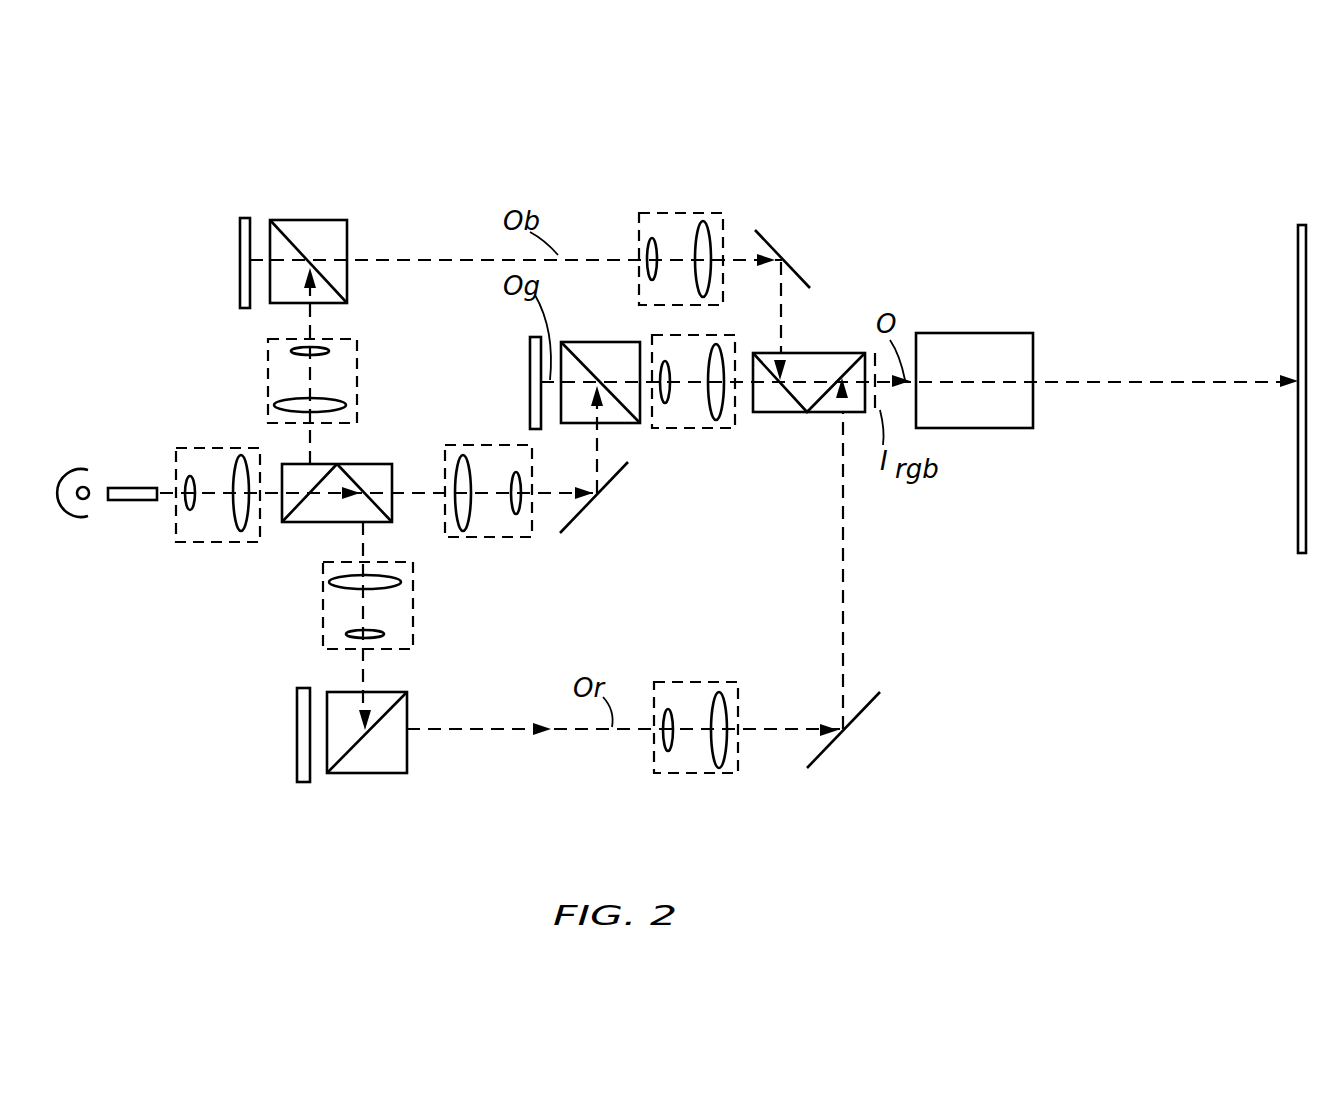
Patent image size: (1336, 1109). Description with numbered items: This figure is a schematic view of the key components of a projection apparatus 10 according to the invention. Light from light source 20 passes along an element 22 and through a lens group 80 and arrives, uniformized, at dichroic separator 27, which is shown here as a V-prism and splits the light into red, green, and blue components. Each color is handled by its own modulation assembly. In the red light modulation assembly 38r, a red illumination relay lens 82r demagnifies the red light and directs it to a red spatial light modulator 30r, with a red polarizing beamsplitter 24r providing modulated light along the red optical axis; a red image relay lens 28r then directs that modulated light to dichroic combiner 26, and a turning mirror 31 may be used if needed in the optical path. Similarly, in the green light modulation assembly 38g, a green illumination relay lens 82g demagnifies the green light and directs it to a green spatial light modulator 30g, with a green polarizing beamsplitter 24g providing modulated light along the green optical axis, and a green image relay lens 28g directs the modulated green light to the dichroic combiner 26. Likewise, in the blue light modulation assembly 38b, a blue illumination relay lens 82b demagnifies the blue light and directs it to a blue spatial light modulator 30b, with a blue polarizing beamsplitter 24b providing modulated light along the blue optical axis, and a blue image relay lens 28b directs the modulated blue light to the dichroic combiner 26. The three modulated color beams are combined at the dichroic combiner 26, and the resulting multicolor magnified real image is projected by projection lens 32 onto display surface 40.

The projection display system 10 is at (1038, 586).
The light source 20 is at (75, 520).
The light pipe 22 is at (138, 500).
The blue polarizing beamsplitter 24b is at (347, 232).
The green polarizing beamsplitter 24g is at (594, 342).
The red polarizing beamsplitter 24r is at (392, 773).
The dichroic combiner 26 is at (822, 413).
The dichroic separator 27 is at (370, 462).
The blue image relay lens 28b is at (672, 213).
The green image relay lens 28g is at (690, 428).
The red image relay lens 28r is at (696, 682).
The blue spatial light modulator 30b is at (238, 257).
The green spatial light modulator 30g is at (528, 372).
The red spatial light modulator 30r is at (302, 782).
The turning mirror 31 is at (795, 268).
The projection lens 32 is at (1016, 428).
The blue light modulation assembly 38b is at (235, 362).
The green light modulation assembly 38g is at (620, 518).
The red light modulation assembly 38r is at (334, 846).
The display surface 40 is at (1298, 297).
The condenser lens group 80 is at (202, 448).
The blue illumination relay lens 82b is at (357, 374).
The green illumination relay lens 82g is at (530, 537).
The red illumination relay lens 82r is at (323, 610).